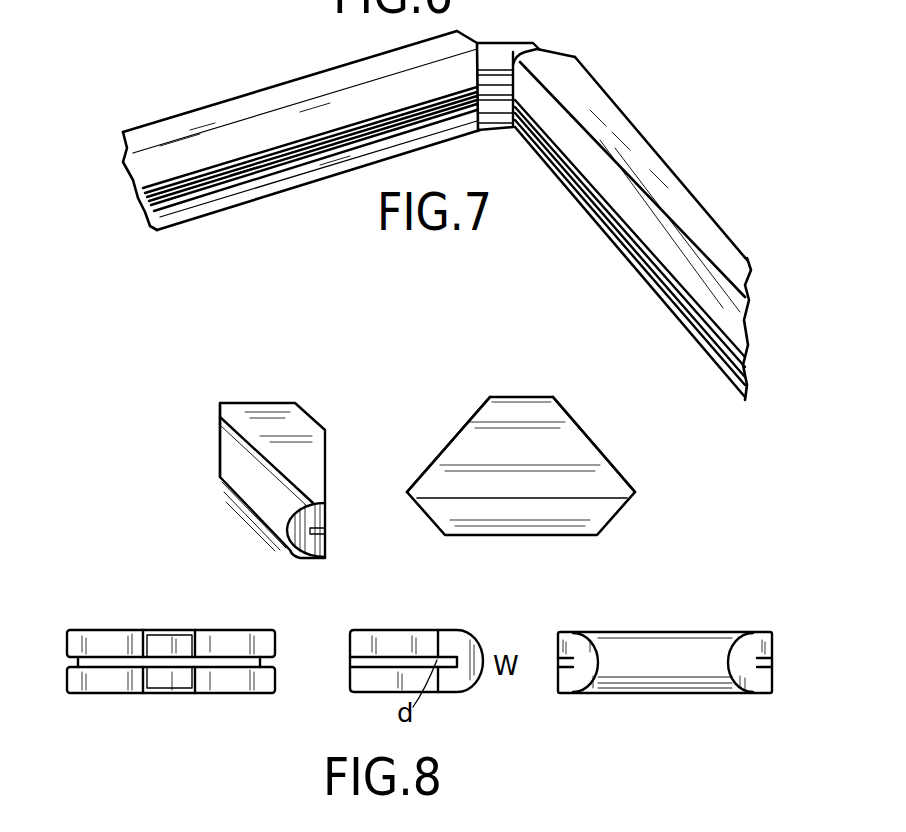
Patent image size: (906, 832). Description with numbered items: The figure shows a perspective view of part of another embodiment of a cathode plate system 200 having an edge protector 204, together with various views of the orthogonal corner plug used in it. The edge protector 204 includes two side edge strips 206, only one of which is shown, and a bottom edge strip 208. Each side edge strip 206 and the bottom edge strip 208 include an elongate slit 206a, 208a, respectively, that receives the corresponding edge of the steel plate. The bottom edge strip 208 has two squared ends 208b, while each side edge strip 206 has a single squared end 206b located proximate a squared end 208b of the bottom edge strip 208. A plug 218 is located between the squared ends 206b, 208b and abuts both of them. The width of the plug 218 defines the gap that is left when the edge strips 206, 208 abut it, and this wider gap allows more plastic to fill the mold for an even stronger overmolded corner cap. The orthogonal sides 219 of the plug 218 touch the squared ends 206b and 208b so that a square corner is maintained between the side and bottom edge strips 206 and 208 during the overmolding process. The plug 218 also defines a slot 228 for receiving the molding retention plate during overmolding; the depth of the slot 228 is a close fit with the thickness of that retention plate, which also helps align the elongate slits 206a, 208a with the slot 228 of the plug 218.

In FIG. 7, the cathode plate system 200 is at (196, 99).
In FIG. 7, the edge protector 204 is at (697, 200).
In FIG. 7, the side edge strip 206 is at (275, 88).
In FIG. 7, the elongate slit 206a is at (297, 150).
In FIG. 7, the squared end 206b is at (537, 2).
In FIG. 7, the bottom edge strip 208 is at (660, 157).
In FIG. 7, the elongate slit 208a is at (580, 180).
In FIG. 7, the squared end 208b is at (533, 47).
In FIG. 8, the plug 218 is at (274, 403).
In FIG. 8, the orthogonal sides 219 is at (245, 402).
In FIG. 8, the slot 228 is at (163, 660).